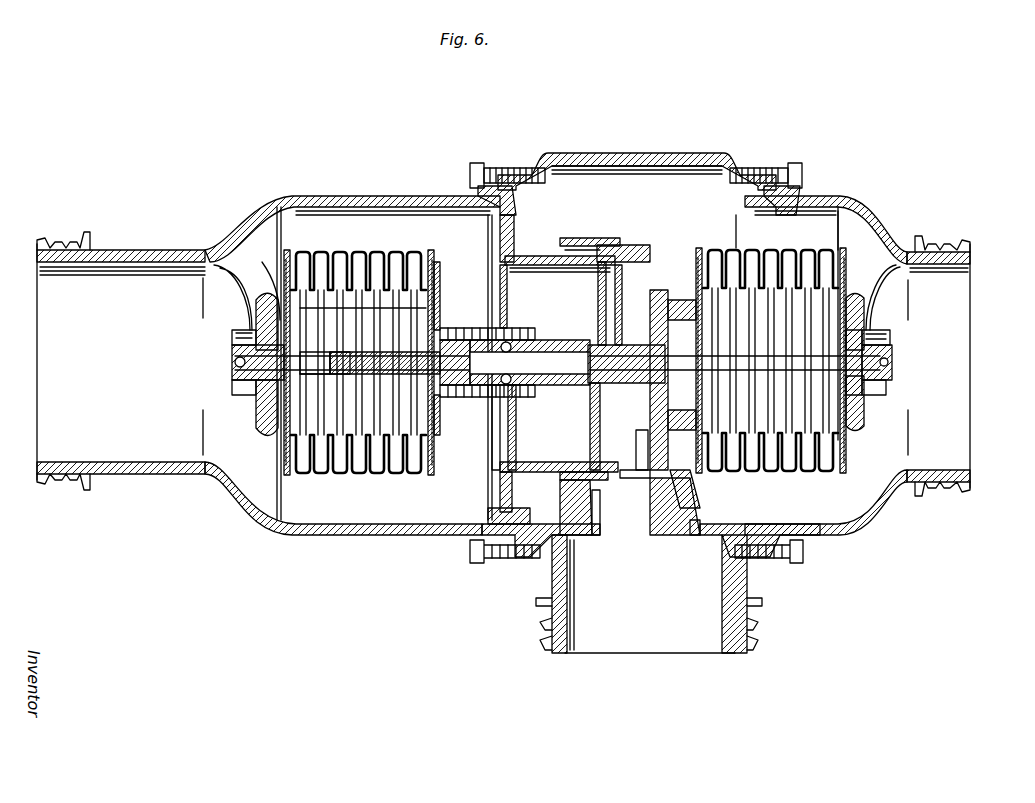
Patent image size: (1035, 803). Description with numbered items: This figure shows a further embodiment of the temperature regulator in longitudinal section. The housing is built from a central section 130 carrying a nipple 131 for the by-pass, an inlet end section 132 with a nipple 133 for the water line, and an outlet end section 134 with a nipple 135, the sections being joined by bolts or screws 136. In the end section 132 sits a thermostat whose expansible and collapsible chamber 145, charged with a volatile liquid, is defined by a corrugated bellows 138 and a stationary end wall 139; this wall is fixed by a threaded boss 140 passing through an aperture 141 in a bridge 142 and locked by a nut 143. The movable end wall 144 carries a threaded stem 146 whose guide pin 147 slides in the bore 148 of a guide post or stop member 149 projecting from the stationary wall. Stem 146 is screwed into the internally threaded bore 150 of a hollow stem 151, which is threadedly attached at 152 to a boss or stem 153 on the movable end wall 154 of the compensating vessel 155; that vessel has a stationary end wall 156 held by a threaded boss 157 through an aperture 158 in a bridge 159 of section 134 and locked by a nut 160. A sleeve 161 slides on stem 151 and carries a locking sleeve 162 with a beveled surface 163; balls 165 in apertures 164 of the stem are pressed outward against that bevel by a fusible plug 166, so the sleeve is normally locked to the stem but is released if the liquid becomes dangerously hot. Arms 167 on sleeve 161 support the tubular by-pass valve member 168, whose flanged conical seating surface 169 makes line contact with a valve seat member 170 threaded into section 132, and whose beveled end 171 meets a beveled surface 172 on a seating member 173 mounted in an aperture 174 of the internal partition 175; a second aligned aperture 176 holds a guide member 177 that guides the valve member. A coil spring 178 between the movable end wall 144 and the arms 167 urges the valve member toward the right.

The central housing section 130 is at (598, 165).
The nipple 131 is at (682, 652).
The end housing section 132 is at (365, 530).
The nipple 133 is at (120, 474).
The end housing section 134 is at (854, 528).
The nipple 135 is at (945, 482).
The bolts or screws 136 is at (500, 165).
The bellows 138 is at (402, 258).
The stationary end wall 139 is at (276, 275).
The threaded boss 140 is at (232, 372).
The aperture 141 is at (258, 390).
The bridge 142 is at (250, 282).
The nut 143 is at (232, 344).
The movable end wall 144 is at (458, 272).
The chamber 145 is at (368, 292).
The stem 146 is at (462, 398).
The guide pin 147 is at (388, 372).
The bore 148 is at (342, 352).
The guide post or stop member 149 is at (317, 388).
The internally threaded bore 150 is at (475, 326).
The stem 151 is at (600, 340).
The threaded attachment 152 is at (612, 345).
The boss or stem 153 is at (600, 388).
The movable end wall 154 is at (662, 312).
The compensating vessel 155 is at (753, 232).
The stationary end wall 156 is at (846, 342).
The threaded boss 157 is at (866, 395).
The aperture 158 is at (874, 332).
The bridge 159 is at (828, 242).
The nut 160 is at (890, 380).
The sleeve 161 is at (540, 338).
The locking sleeve 162 is at (515, 322).
The beveled surface 163 is at (520, 330).
The apertures 164 is at (540, 394).
The balls 165 is at (488, 415).
The plug 166 is at (530, 362).
The arms 167 is at (530, 457).
The by-pass valve member 168 is at (594, 410).
The conical seating surface 169 is at (514, 478).
The valve seat member 170 is at (486, 508).
The beveled end 171 is at (624, 480).
The beveled surface 172 is at (640, 472).
The seating member 173 is at (676, 520).
The aperture 174 is at (690, 528).
The internal partition 175 is at (655, 240).
The aperture 176 is at (580, 518).
The guide member 177 is at (602, 478).
The coil spring 178 is at (455, 326).